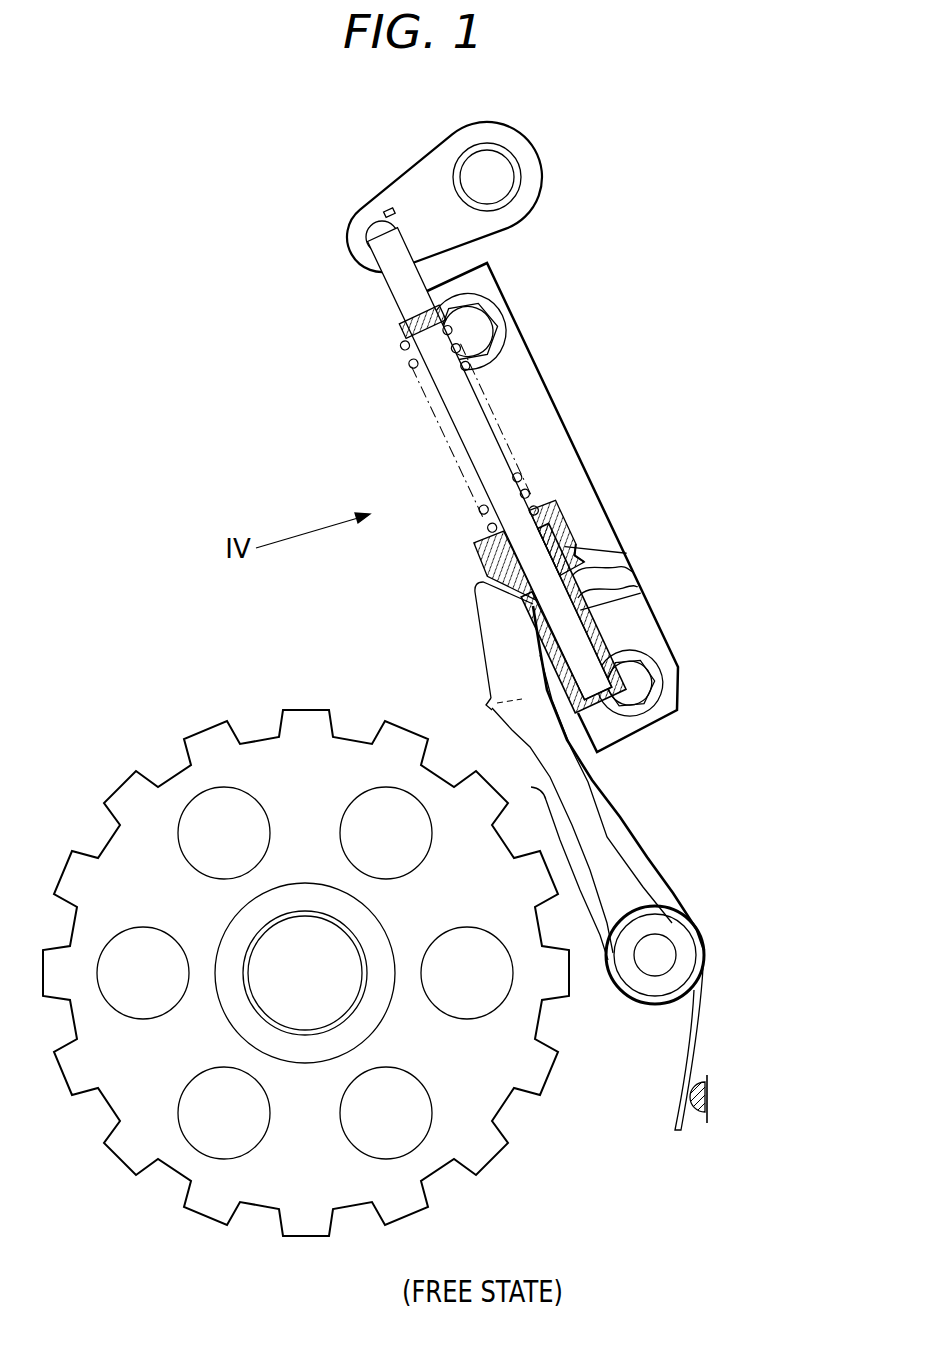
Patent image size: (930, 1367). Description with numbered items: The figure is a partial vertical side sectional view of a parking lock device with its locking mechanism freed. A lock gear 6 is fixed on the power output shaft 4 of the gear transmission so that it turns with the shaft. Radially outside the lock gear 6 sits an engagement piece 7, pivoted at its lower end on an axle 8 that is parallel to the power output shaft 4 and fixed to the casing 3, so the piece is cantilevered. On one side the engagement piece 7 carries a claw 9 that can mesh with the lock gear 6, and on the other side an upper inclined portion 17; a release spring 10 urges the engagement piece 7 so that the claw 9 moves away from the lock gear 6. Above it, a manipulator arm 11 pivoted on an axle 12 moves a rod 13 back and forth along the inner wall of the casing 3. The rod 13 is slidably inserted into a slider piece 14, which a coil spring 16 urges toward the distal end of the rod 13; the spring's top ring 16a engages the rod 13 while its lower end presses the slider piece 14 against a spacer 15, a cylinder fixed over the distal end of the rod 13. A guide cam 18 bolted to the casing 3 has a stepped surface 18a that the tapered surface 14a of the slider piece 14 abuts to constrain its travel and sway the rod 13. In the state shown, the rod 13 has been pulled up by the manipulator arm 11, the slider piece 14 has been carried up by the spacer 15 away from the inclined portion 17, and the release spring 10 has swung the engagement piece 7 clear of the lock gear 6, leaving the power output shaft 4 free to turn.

The casing 3 is at (543, 259).
The power output shaft 4 is at (268, 1003).
The lock gear 6 is at (487, 1105).
The engagement piece 7 is at (507, 673).
The axle 8 is at (662, 949).
The claw 9 is at (507, 772).
The release spring 10 is at (617, 840).
The manipulator arm 11 is at (412, 192).
The axle 12 is at (503, 174).
The rod 13 is at (397, 285).
The slider piece 14 is at (547, 532).
The tapered surface 14a is at (568, 530).
The spacer 15 is at (592, 604).
The coil spring 16 is at (485, 352).
The top ring 16a is at (400, 330).
The upper inclined portion 17 is at (477, 580).
The guide cam 18 is at (598, 550).
The stepped surface 18a is at (580, 582).